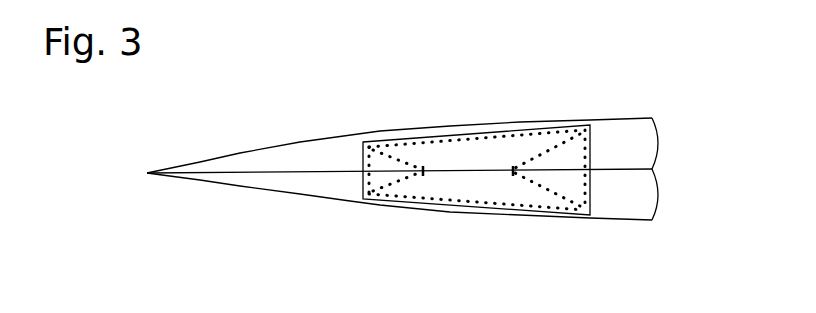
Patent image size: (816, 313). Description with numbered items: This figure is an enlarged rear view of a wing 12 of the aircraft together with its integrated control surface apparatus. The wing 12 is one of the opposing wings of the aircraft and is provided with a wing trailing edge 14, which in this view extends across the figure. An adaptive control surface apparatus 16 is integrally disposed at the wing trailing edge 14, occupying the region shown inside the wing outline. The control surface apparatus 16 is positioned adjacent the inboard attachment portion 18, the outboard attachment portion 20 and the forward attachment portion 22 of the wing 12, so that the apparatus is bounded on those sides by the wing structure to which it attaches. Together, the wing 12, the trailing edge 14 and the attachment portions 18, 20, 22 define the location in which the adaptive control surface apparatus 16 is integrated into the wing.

The wing 12 is at (302, 141).
The wing trailing edge 14 is at (637, 169).
The adaptive control surface apparatus 16 is at (453, 176).
The inboard attachment portion 18 is at (602, 130).
The outboard attachment portion 20 is at (312, 187).
The forward attachment portion 22 is at (430, 117).